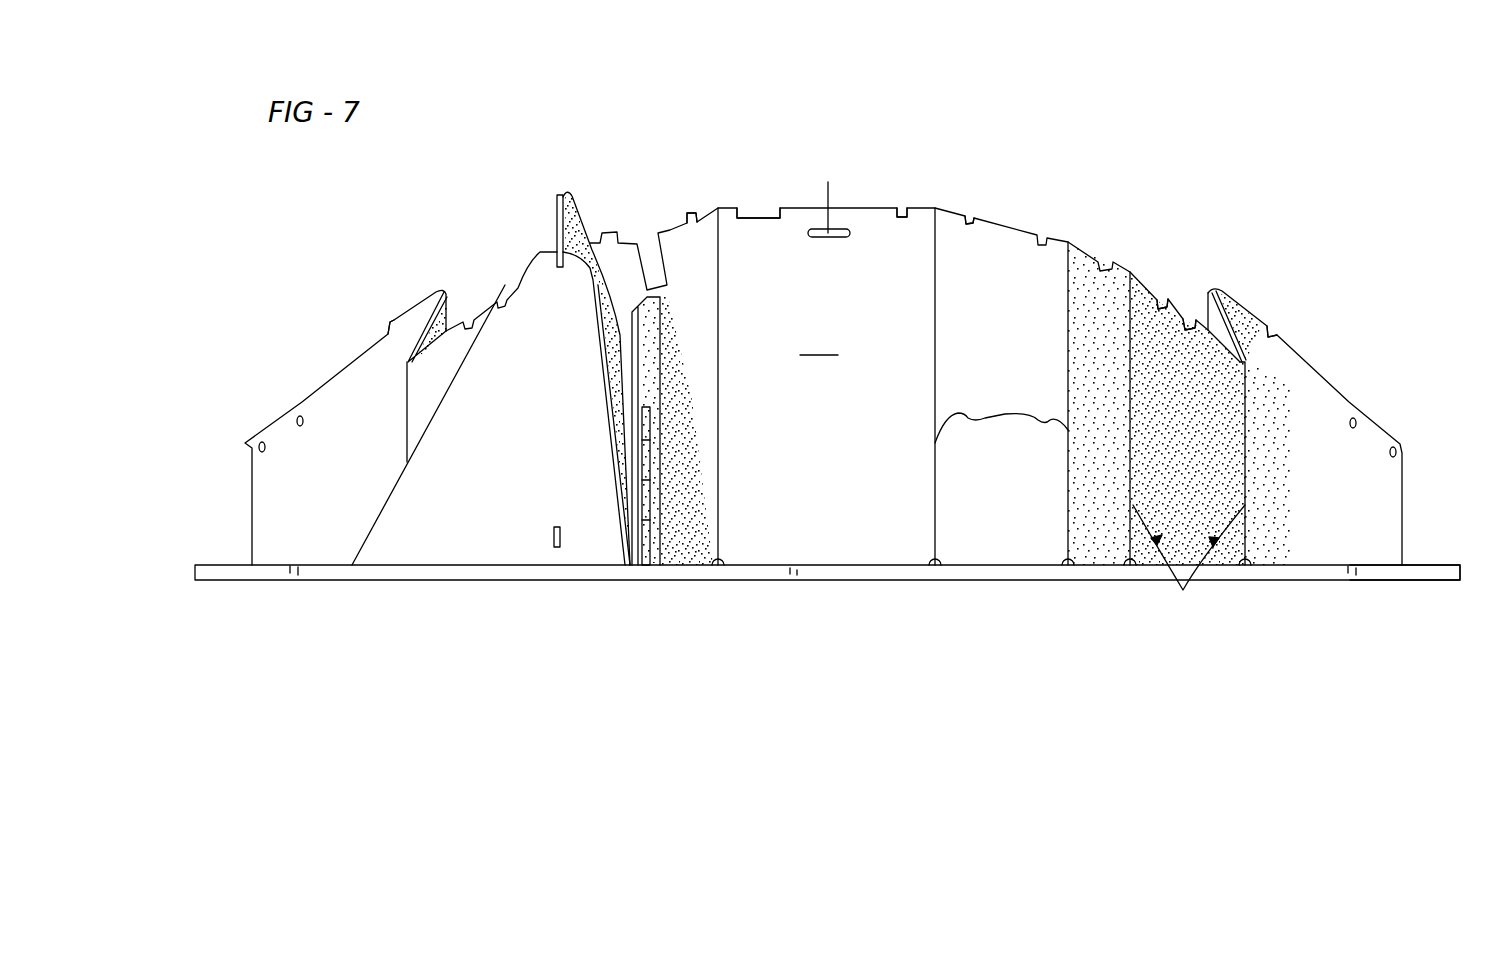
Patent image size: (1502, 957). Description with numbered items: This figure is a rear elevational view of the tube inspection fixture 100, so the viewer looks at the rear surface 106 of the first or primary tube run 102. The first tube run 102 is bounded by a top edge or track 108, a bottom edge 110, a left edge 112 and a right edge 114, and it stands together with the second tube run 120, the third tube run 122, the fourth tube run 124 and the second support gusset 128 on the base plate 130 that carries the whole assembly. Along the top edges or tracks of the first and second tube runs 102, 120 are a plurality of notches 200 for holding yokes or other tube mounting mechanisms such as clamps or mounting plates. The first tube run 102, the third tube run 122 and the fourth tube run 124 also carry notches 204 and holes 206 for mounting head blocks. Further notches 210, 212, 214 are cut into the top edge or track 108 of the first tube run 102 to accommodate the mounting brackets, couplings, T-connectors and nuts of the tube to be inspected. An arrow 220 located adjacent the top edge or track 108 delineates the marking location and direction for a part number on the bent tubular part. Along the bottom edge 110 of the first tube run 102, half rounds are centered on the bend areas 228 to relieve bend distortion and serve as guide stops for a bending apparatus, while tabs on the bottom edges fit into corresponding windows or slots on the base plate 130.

The tube inspection fixture 100 is at (1182, 215).
The first or primary tube run 102 is at (1003, 247).
The rear surface 106 is at (826, 386).
The top edge or track 108 is at (1250, 312).
The bottom edge 110 is at (778, 570).
The left edge 112 is at (1404, 472).
The right edge 114 is at (252, 470).
The second tube run 120 is at (650, 331).
The third tube run 122 is at (573, 197).
The fourth tube run 124 is at (665, 500).
The second support gusset 128 is at (523, 312).
The base plate 130 is at (1425, 565).
The notches 200 is at (688, 213).
The notches 204 is at (300, 416).
The holes 206 is at (262, 442).
The notch 210 is at (752, 215).
The notch 212 is at (347, 367).
The notch 214 is at (650, 250).
The arrow 220 is at (825, 195).
The bend areas 228 is at (1090, 504).